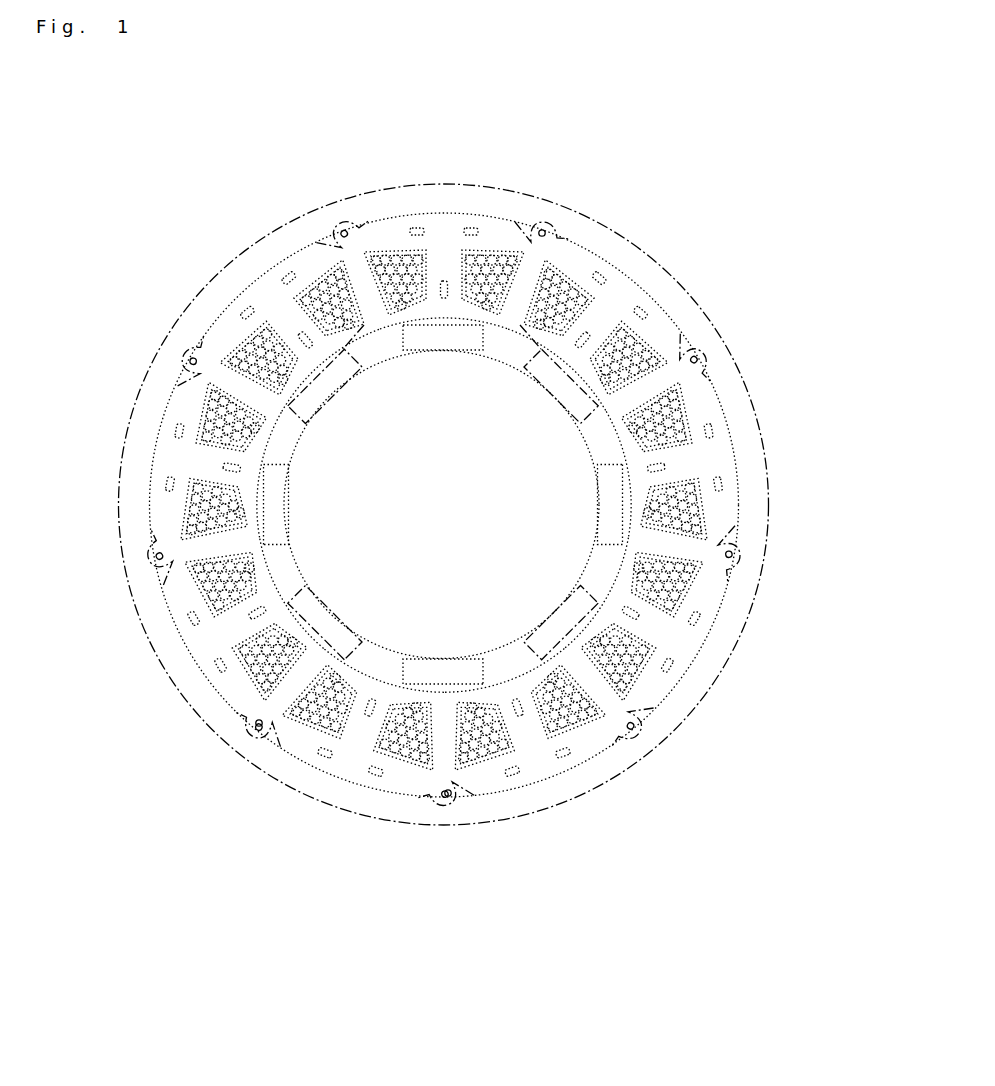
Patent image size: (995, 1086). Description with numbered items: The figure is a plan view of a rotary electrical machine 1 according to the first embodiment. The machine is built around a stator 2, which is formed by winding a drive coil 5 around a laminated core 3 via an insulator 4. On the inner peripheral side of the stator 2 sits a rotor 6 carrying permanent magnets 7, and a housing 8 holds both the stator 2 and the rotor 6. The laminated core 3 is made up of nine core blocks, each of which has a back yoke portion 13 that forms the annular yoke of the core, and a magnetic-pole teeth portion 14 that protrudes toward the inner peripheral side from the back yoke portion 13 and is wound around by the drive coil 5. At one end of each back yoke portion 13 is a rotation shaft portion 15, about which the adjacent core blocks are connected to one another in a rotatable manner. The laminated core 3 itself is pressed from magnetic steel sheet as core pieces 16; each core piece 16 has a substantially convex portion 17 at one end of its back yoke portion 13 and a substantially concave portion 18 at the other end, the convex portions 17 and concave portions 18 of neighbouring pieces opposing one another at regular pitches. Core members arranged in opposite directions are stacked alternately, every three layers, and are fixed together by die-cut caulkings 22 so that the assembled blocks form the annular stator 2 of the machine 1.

The rotary electrical machine 1 is at (536, 185).
The stator 2 is at (575, 237).
The laminated core 3 is at (620, 305).
The insulator 4 is at (665, 345).
The drive coil 5 is at (700, 358).
The rotor 6 is at (735, 552).
The permanent magnets 7 is at (617, 507).
The housing 8 is at (464, 483).
The back yoke portion 13 is at (444, 581).
The magnetic-pole teeth portion 14 is at (545, 718).
The rotation shaft portion 15 is at (445, 792).
The core pieces 16 is at (298, 737).
The substantially convex portion 17 is at (475, 562).
The substantially concave portion 18 is at (246, 718).
The die-cut caulkings 22 is at (409, 502).